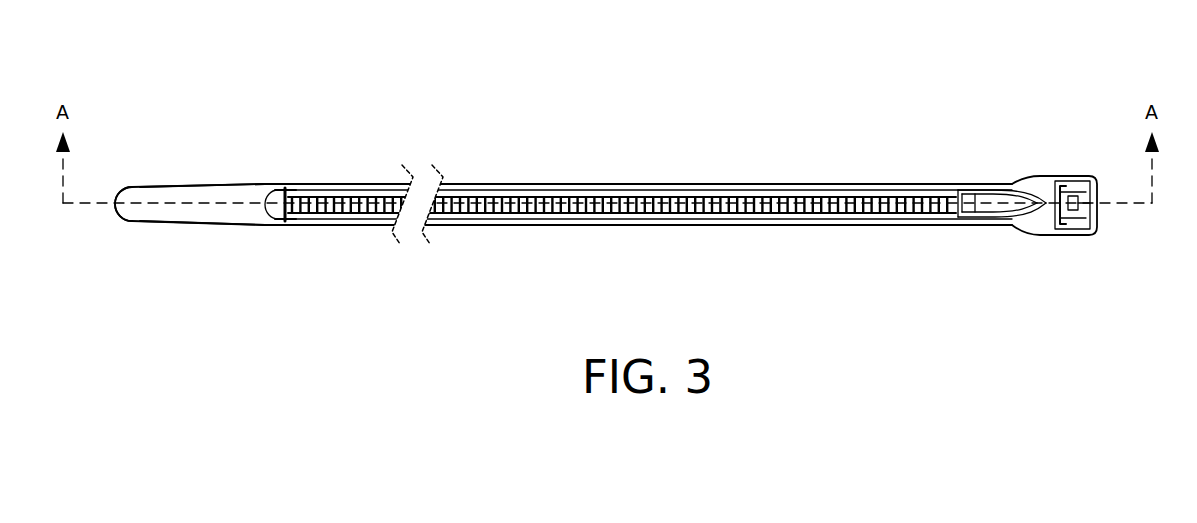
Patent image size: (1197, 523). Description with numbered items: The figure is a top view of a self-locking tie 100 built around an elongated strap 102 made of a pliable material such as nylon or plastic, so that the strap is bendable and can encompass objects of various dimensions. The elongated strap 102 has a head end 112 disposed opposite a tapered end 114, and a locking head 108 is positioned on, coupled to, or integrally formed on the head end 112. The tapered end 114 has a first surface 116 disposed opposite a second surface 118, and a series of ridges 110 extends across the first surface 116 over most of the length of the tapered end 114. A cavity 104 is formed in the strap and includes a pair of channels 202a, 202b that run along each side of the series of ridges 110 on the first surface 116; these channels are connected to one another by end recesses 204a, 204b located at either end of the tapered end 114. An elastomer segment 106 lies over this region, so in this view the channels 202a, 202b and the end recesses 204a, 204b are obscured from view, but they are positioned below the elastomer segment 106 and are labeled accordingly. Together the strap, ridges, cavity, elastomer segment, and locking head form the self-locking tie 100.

The self-locking tie 100 is at (318, 92).
The elongated strap 102 is at (658, 184).
The cavity 104 is at (1000, 218).
The elastomer segment 106 is at (990, 189).
The locking head 108 is at (1072, 236).
The series of ridges 110 is at (570, 197).
The head end 112 is at (1000, 189).
The tapered end 114 is at (150, 222).
The first surface 116 is at (232, 188).
The second surface 118 is at (207, 238).
The channel 202a is at (757, 190).
The channel 202b is at (702, 220).
The end recess 204a is at (1012, 228).
The end recess 204b is at (283, 188).